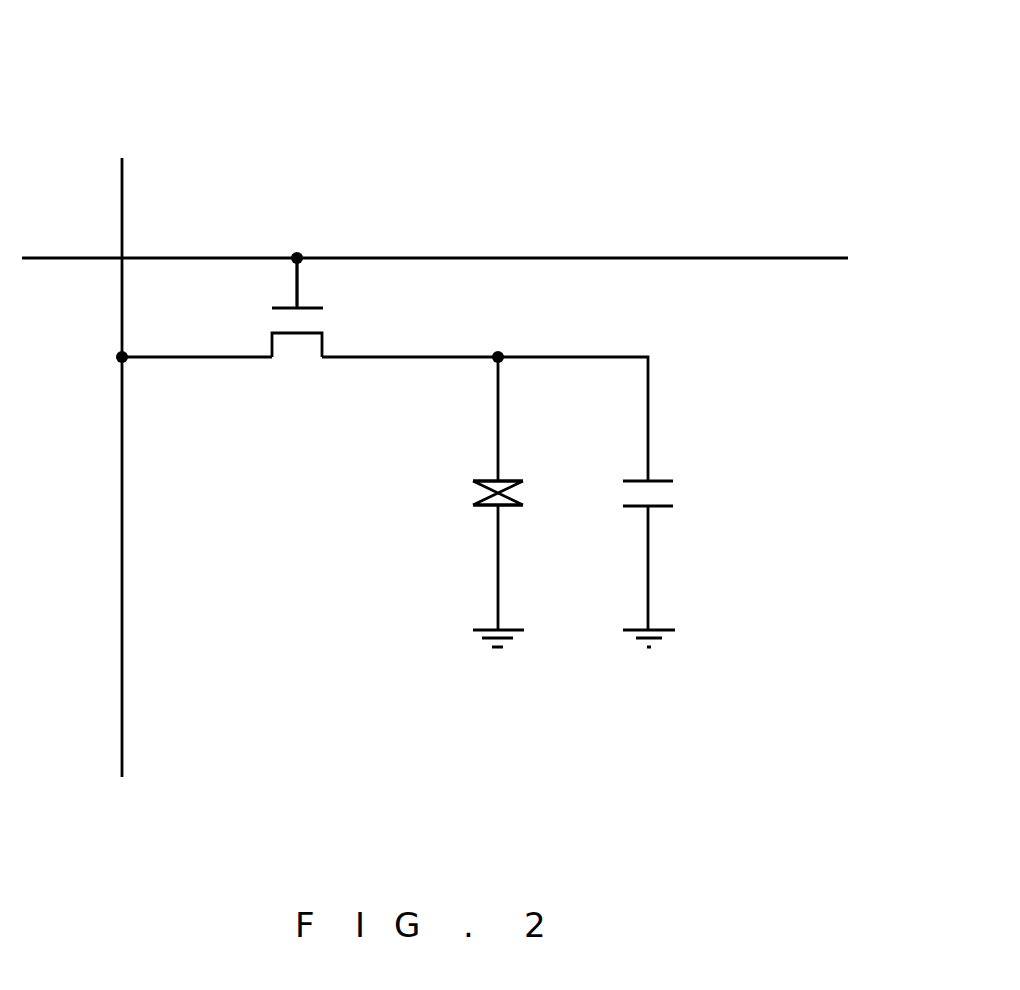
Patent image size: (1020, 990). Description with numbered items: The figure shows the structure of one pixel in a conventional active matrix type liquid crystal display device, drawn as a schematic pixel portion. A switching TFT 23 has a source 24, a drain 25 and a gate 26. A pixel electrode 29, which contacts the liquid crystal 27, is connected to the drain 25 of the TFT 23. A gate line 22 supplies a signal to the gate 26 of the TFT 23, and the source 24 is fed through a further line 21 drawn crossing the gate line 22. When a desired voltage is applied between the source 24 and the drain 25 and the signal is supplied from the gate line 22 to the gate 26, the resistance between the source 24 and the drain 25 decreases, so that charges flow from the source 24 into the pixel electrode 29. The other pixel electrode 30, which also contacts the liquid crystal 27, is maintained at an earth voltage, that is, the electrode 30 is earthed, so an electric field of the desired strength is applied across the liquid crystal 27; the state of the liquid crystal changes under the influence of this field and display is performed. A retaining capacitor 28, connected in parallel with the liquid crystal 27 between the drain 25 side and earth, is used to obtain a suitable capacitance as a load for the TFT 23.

The data signal line 21 is at (122, 207).
The gate line 22 is at (600, 259).
The TFT 23 is at (295, 318).
The source 24 is at (198, 358).
The drain 25 is at (397, 358).
The gate 26 is at (297, 282).
The liquid crystal 27 is at (478, 494).
The retaining capacitor 28 is at (652, 490).
The pixel electrode 29 is at (498, 480).
The other pixel electrode 30 is at (497, 505).